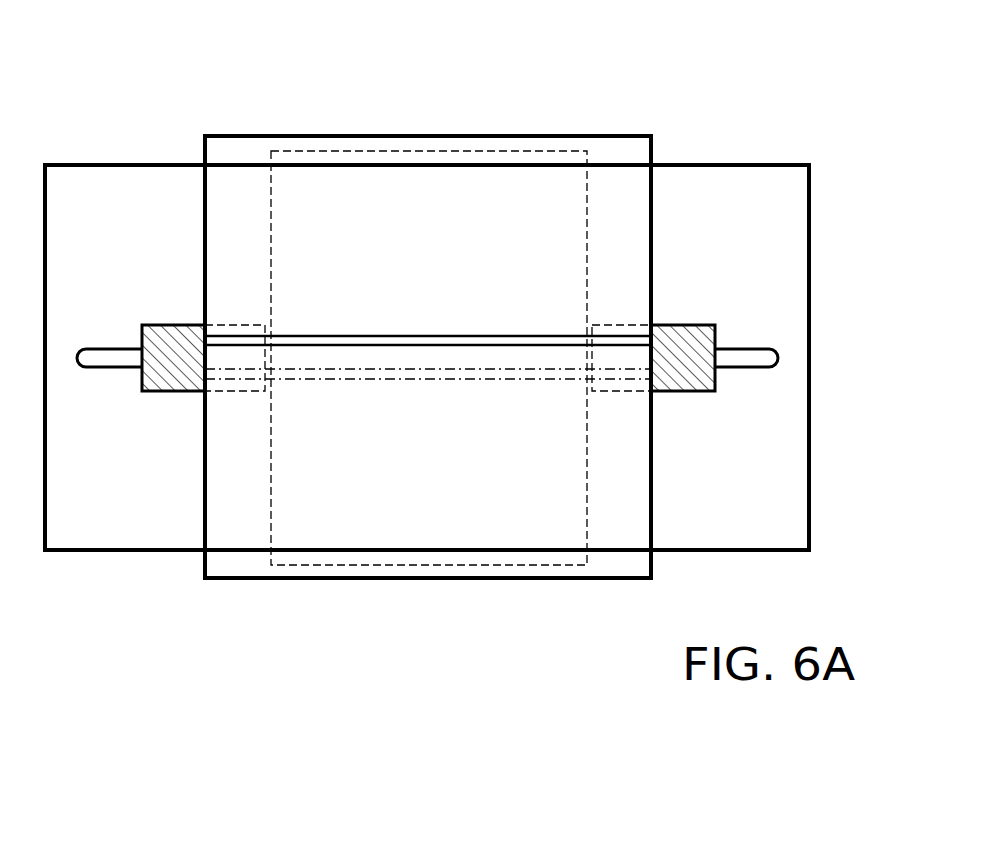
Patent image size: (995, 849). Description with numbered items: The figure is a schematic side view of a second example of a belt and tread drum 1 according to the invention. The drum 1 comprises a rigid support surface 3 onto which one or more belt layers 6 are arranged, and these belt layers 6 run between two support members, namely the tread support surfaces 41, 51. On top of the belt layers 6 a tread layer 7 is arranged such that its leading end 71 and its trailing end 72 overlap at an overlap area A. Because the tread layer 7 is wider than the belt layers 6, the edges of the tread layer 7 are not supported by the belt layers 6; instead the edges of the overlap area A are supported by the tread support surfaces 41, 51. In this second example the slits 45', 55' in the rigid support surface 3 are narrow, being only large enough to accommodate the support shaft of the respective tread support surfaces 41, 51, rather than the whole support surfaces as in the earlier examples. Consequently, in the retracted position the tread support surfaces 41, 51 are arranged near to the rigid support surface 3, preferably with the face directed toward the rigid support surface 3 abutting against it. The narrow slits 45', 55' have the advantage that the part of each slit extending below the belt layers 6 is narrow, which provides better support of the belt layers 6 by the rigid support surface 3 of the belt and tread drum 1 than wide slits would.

The belt and tread drum 1 is at (788, 88).
The rigid support surface 3 is at (684, 190).
The belt layers 6 is at (558, 520).
The tread layer 7 is at (637, 563).
The tread support surface 41 is at (172, 372).
The slit 45' is at (109, 305).
The tread support surface 51 is at (713, 325).
The slit 55' is at (798, 366).
The leading end 71 is at (623, 262).
The trailing end 72 is at (630, 463).
The overlap area A is at (427, 330).